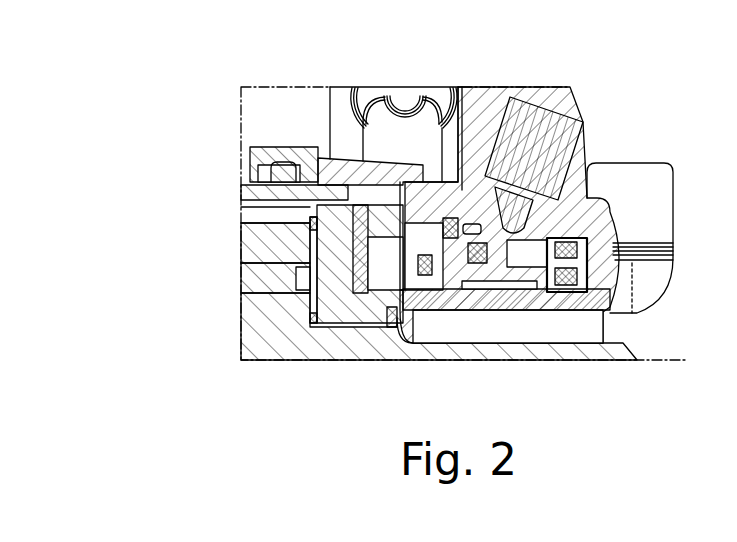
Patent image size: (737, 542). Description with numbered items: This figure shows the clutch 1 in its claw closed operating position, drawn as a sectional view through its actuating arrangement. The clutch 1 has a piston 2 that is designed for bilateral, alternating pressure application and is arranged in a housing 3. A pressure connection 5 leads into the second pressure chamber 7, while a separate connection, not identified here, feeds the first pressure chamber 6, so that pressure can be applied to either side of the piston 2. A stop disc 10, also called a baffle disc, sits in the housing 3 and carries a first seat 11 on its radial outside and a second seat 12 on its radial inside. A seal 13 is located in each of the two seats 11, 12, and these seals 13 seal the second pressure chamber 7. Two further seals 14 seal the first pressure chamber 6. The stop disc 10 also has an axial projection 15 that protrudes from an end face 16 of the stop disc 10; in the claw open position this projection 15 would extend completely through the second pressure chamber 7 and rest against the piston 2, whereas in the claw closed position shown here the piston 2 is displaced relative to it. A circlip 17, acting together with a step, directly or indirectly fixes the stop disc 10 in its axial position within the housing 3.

The clutch 1 is at (386, 387).
The piston 2 is at (457, 273).
The housing 3 is at (560, 302).
The pressure connection 5 is at (530, 140).
The first pressure chamber 6 is at (580, 262).
The second pressure chamber 7 is at (575, 238).
The stop disc 10 is at (512, 98).
The first seat 11 is at (469, 212).
The second seat 12 is at (483, 277).
The seal 13 is at (432, 213).
The further seal 14 is at (573, 248).
The axial projection 15 is at (500, 278).
The end face 16 is at (545, 210).
The circlip 17 is at (385, 235).